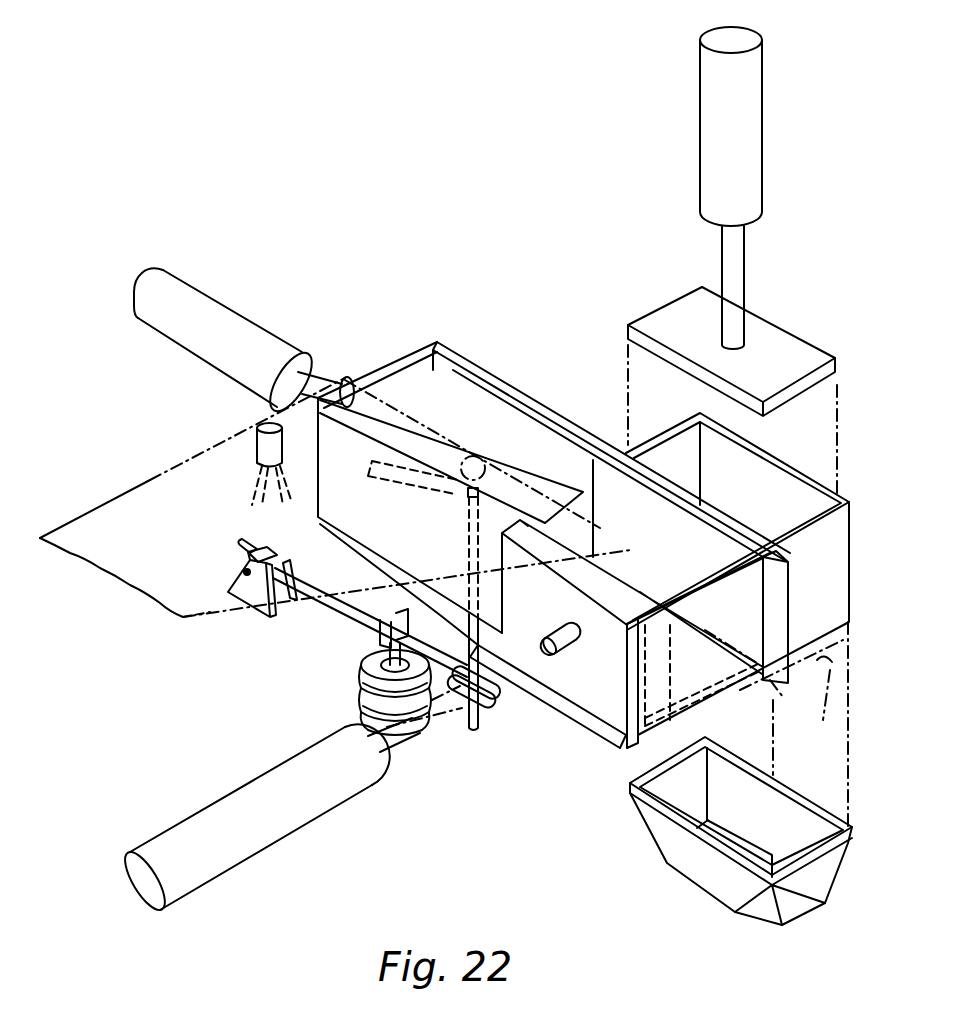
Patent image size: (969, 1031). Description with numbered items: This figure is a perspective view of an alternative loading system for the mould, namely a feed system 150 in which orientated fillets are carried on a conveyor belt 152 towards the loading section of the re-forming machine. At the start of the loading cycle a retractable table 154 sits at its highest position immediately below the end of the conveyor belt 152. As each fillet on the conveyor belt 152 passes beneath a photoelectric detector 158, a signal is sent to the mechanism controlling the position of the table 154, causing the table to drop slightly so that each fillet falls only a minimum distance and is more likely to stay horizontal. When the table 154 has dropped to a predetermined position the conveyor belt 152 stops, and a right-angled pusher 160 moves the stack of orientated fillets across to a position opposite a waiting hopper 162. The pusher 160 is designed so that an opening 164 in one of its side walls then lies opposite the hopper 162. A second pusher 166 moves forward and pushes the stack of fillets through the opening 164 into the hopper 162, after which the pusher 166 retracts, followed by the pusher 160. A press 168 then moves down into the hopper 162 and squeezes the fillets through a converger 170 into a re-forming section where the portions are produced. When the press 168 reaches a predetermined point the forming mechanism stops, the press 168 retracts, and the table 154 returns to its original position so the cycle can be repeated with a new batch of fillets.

The feed system 150 is at (341, 273).
The conveyor belt 152 is at (130, 518).
The retractable table 154 is at (546, 490).
The photoelectric detector 158 is at (258, 440).
The right-angled pusher 160 is at (430, 397).
The hopper 162 is at (796, 482).
The opening 164 is at (500, 424).
The second pusher 166 is at (612, 682).
The press 168 is at (797, 355).
The converger 170 is at (795, 805).